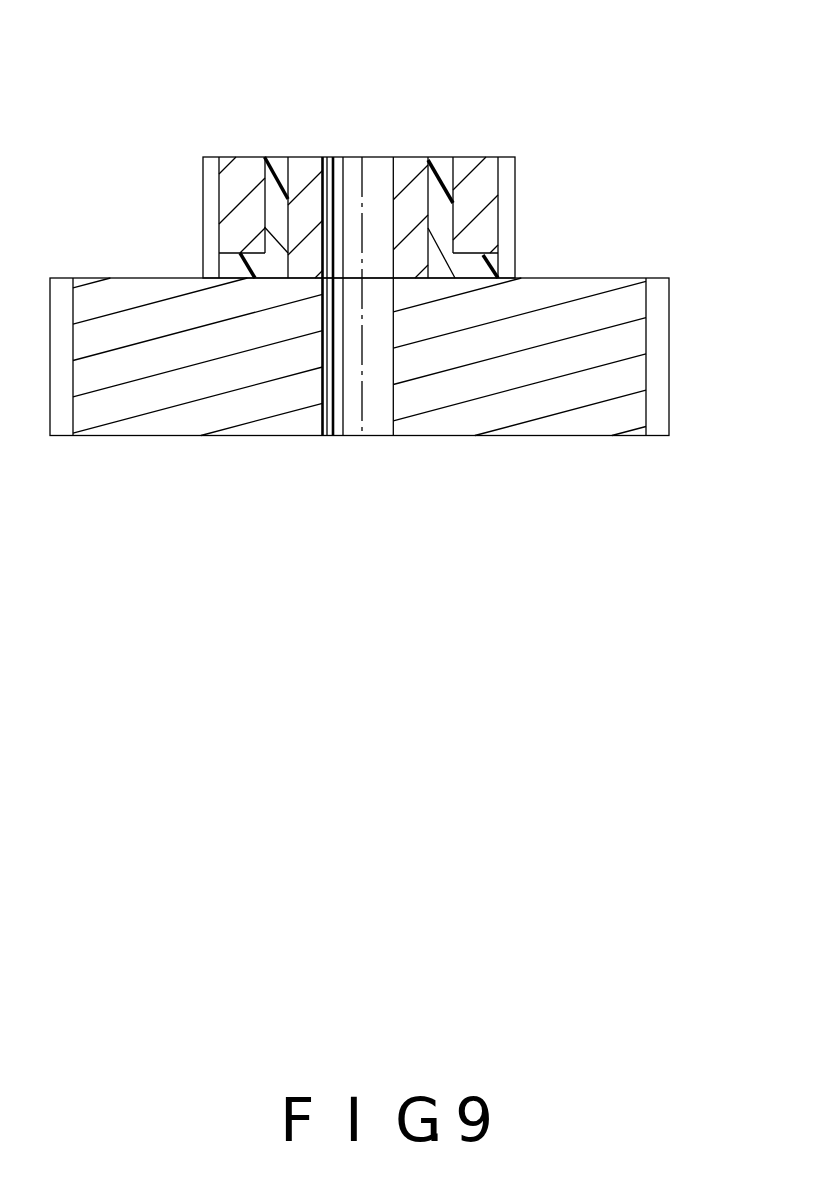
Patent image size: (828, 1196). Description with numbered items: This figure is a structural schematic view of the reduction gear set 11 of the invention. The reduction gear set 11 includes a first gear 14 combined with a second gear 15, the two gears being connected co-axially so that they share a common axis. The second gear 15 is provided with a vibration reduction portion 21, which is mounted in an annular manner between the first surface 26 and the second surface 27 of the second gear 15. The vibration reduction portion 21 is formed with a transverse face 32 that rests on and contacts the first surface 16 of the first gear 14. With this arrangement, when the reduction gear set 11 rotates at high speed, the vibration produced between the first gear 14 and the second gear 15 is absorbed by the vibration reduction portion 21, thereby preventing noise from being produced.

The reduction gear set 11 is at (542, 127).
The first gear 14 is at (518, 408).
The second gear 15 is at (477, 173).
The first surface of the first gear 16 is at (608, 278).
The vibration reduction portion 21 is at (440, 167).
The first surface of the second gear 26 is at (248, 157).
The second surface of the second gear 27 is at (239, 278).
The transverse face 32 is at (480, 265).